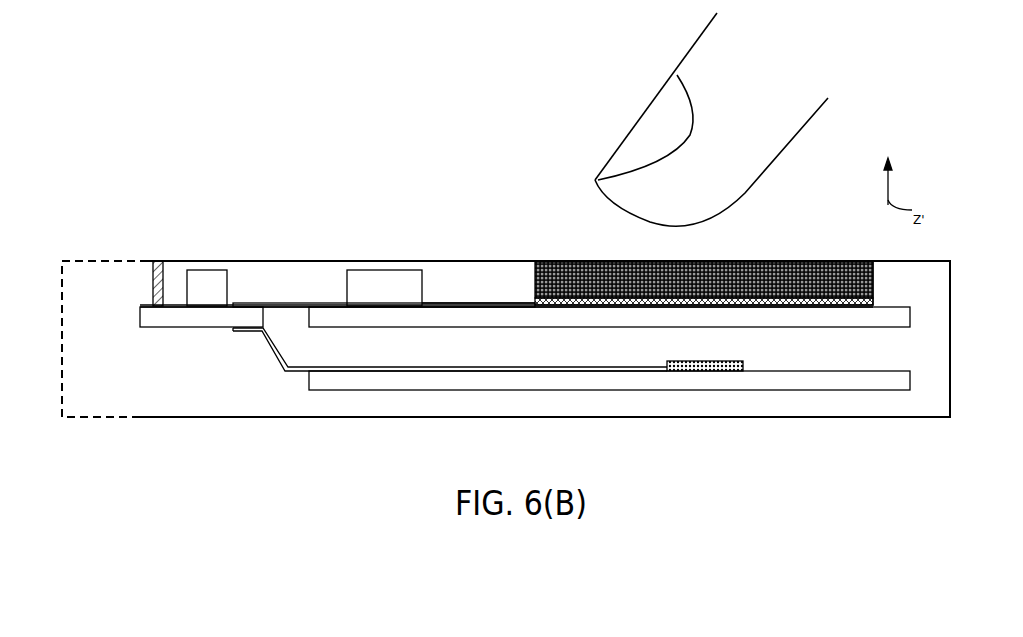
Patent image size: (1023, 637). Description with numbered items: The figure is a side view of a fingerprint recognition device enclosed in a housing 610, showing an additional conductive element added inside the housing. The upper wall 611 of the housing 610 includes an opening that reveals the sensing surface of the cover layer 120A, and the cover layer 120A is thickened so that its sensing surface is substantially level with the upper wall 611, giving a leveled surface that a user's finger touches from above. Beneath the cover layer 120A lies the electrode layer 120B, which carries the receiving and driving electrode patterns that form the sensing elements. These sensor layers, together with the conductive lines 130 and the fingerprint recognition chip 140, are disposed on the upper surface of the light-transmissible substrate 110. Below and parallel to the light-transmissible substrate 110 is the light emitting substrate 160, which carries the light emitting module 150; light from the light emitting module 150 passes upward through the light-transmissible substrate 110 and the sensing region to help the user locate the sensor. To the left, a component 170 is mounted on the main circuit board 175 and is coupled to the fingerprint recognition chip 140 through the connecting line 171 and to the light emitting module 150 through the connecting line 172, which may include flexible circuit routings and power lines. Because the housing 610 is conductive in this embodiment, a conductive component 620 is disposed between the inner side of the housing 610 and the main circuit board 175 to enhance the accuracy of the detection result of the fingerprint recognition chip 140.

The housing 610 is at (951, 316).
The upper wall 611 is at (436, 259).
The conductive component 620 is at (152, 282).
The processor 170 is at (207, 288).
The fingerprint recognition chip 140 is at (384, 288).
The connecting line 171 is at (283, 303).
The conductive lines 130 is at (458, 303).
The cover layer 120A is at (873, 284).
The electrode layer 120B is at (873, 302).
The main circuit board 175 is at (197, 328).
The light-transmissible substrate 110 is at (346, 328).
The connecting line 172 is at (438, 366).
The light emitting module 150 is at (744, 363).
The light emitting substrate 160 is at (891, 371).